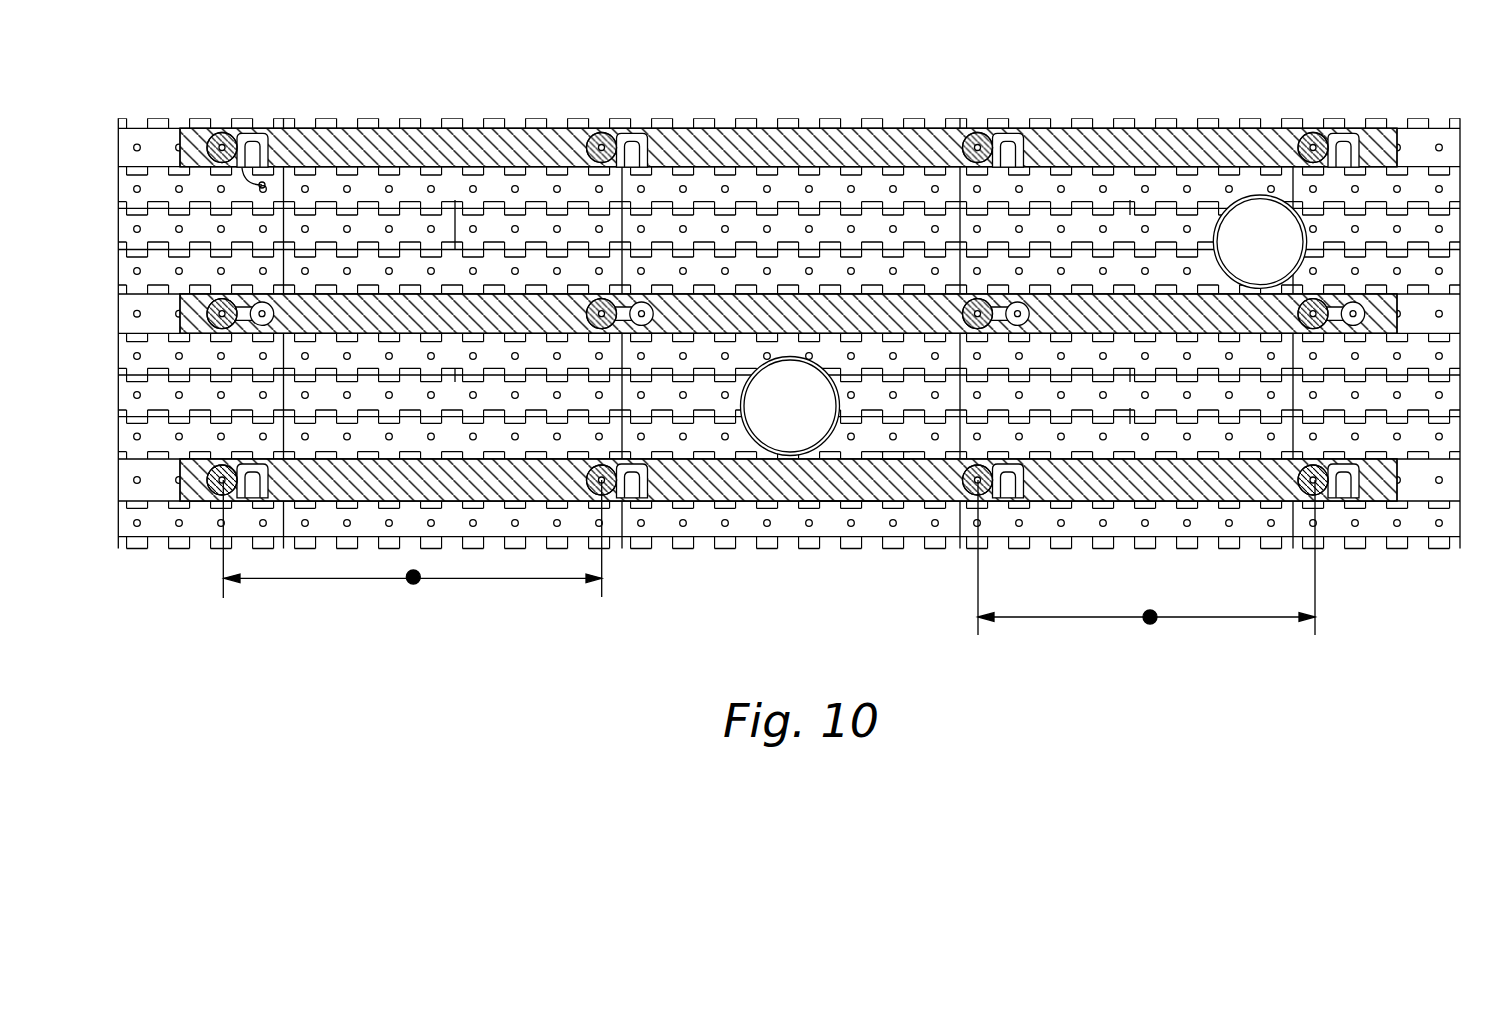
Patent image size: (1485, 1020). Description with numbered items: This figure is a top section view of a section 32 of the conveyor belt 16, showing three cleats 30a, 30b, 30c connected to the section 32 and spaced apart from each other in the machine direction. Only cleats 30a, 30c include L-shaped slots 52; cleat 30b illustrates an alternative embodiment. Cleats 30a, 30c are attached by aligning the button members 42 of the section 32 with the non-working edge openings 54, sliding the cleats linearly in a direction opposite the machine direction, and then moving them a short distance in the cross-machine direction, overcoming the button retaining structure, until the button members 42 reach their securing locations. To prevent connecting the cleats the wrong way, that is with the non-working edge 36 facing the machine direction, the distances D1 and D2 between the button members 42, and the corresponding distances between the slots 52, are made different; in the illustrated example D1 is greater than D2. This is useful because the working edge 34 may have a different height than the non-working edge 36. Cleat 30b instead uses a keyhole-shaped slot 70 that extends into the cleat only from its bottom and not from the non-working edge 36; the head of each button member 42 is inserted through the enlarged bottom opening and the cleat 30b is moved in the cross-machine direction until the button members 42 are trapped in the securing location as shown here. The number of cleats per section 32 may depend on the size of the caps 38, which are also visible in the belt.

The cleat 30a is at (905, 135).
The cleat 30b is at (1116, 318).
The cleat 30c is at (712, 483).
The non-working edge opening 54 is at (262, 185).
The button member 42 is at (600, 145).
The L-shaped slot 52 is at (1342, 148).
The slot 70 is at (645, 300).
The section 32 is at (199, 545).
The conveyor belt 16 is at (204, 527).
The non-working edge 36 is at (838, 497).
The working edge 34 is at (895, 455).
The cap 38 is at (1253, 227).
The distance between button members D1 is at (413, 584).
The distance between button members D2 is at (1150, 624).